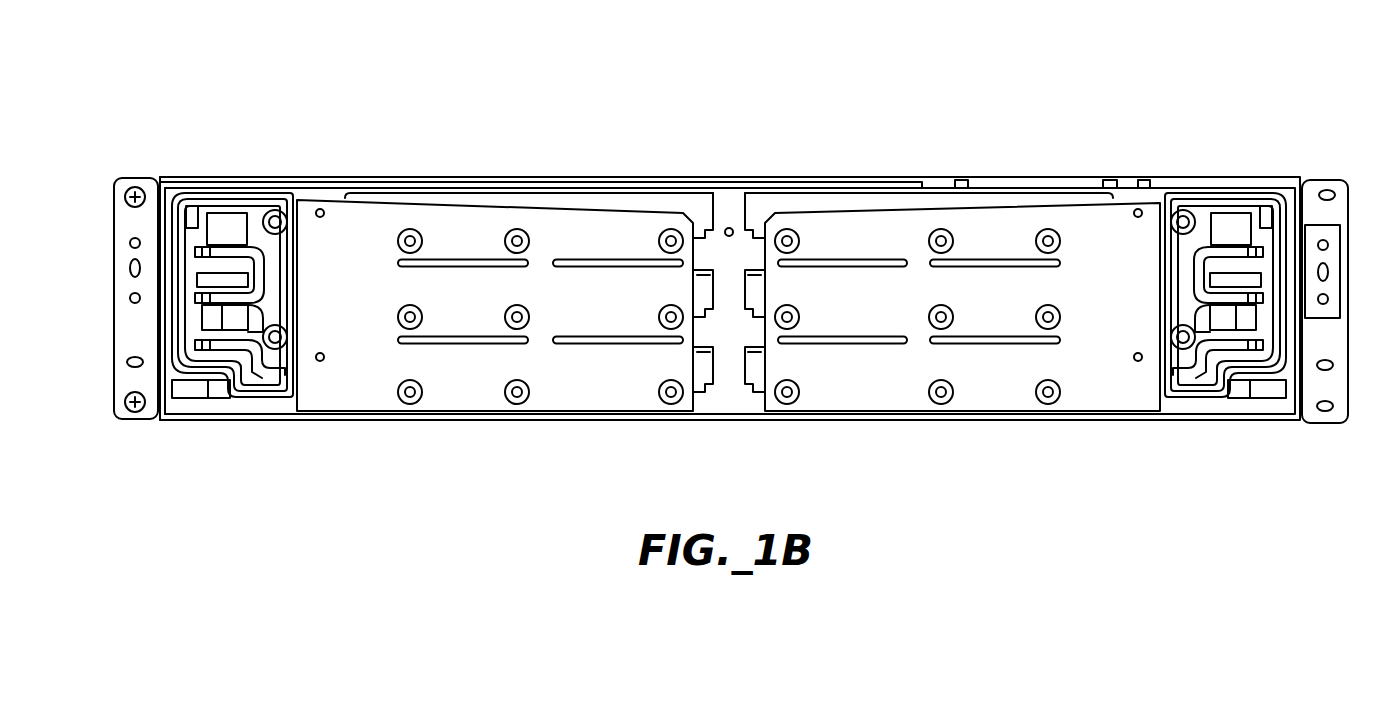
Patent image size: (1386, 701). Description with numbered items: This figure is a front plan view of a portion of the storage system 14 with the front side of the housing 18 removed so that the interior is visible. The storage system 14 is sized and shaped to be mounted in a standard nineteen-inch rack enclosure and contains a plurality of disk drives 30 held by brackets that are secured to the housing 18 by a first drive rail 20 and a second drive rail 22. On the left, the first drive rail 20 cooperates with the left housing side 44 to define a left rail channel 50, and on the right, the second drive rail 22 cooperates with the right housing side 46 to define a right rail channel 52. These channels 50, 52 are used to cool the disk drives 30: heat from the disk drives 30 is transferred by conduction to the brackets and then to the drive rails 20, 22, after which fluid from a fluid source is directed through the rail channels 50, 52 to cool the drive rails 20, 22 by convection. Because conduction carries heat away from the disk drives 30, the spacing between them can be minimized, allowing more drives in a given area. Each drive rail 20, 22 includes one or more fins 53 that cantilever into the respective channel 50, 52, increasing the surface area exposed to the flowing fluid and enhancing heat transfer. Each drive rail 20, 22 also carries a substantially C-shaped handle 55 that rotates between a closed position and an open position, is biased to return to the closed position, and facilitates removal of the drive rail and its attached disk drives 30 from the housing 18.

The storage system 14 is at (1038, 88).
The housing 18 is at (117, 175).
The left housing side 44 is at (150, 190).
The left rail channel 50 is at (233, 217).
The first drive rail 20 is at (273, 263).
The disk drives 30 is at (688, 208).
The second drive rail 22 is at (1185, 253).
The fins 53 is at (1230, 220).
The handle 55 is at (1243, 203).
The right housing side 46 is at (1325, 188).
The right rail channel 52 is at (1228, 323).